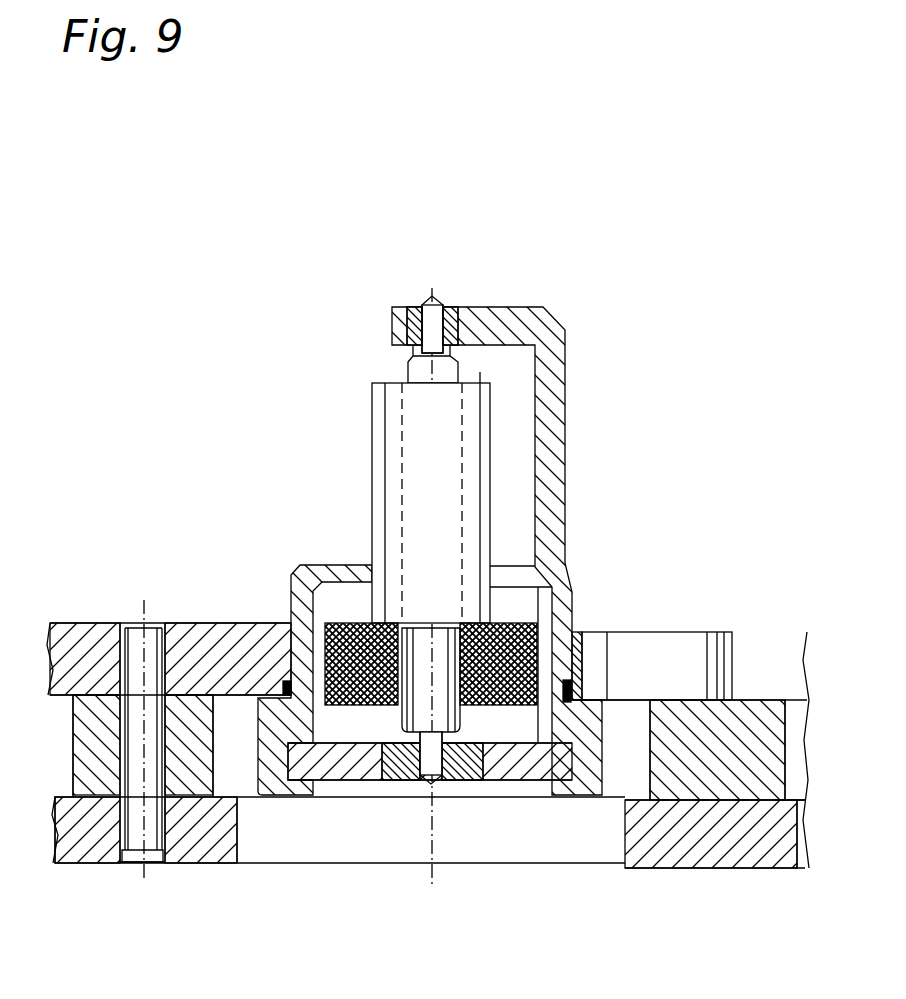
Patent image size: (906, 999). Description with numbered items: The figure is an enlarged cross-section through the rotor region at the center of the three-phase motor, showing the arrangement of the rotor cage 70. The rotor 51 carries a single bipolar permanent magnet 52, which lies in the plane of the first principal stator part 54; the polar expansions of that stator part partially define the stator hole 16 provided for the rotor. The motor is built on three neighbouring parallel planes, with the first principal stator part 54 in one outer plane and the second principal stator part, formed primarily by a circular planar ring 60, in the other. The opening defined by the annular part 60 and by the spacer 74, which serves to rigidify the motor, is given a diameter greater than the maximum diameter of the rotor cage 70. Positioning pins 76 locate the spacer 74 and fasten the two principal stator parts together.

The stator hole 16 is at (284, 606).
The rotor 51 is at (366, 402).
The bipolar permanent magnet 52 is at (533, 625).
The first principal stator part 54 is at (224, 612).
The ring 60 is at (203, 827).
The rotor cage 70 is at (552, 382).
The spacer 74 is at (98, 760).
The positioning pins 76 is at (143, 680).